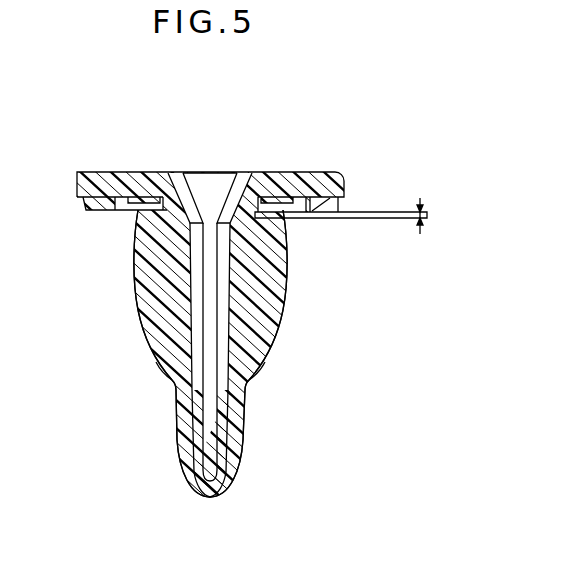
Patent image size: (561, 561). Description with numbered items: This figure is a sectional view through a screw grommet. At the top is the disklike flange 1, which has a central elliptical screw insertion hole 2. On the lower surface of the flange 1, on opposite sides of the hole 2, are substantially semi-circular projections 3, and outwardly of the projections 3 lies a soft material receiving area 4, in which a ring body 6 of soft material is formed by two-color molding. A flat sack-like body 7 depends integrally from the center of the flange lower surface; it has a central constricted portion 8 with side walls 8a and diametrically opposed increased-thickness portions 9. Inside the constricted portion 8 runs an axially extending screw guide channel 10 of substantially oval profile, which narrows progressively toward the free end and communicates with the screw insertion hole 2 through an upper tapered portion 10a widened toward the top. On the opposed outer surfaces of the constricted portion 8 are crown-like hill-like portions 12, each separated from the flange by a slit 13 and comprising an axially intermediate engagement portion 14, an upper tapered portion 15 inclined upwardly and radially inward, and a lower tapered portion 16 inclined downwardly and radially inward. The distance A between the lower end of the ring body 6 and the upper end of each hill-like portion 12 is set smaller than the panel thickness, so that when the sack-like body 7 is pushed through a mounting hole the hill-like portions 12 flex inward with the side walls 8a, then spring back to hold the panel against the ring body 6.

The disklike flange 1 is at (313, 173).
The screw insertion hole 2 is at (220, 186).
The projection 3 is at (136, 198).
The soft material receiving area 4 is at (104, 212).
The ring body 6 is at (326, 219).
The sack-like body 7 is at (177, 408).
The constricted portion 8 is at (196, 474).
The side wall 8a is at (196, 447).
The increased-thickness portion 9 is at (241, 422).
The screw guide channel 10 is at (208, 318).
The upper tapered portion 10a is at (187, 186).
The hill-like portion 12 is at (160, 370).
The slit 13 is at (152, 205).
The engagement portion 14 is at (136, 284).
The upper tapered portion 15 is at (135, 256).
The lower tapered portion 16 is at (140, 316).
The distance A is at (428, 217).